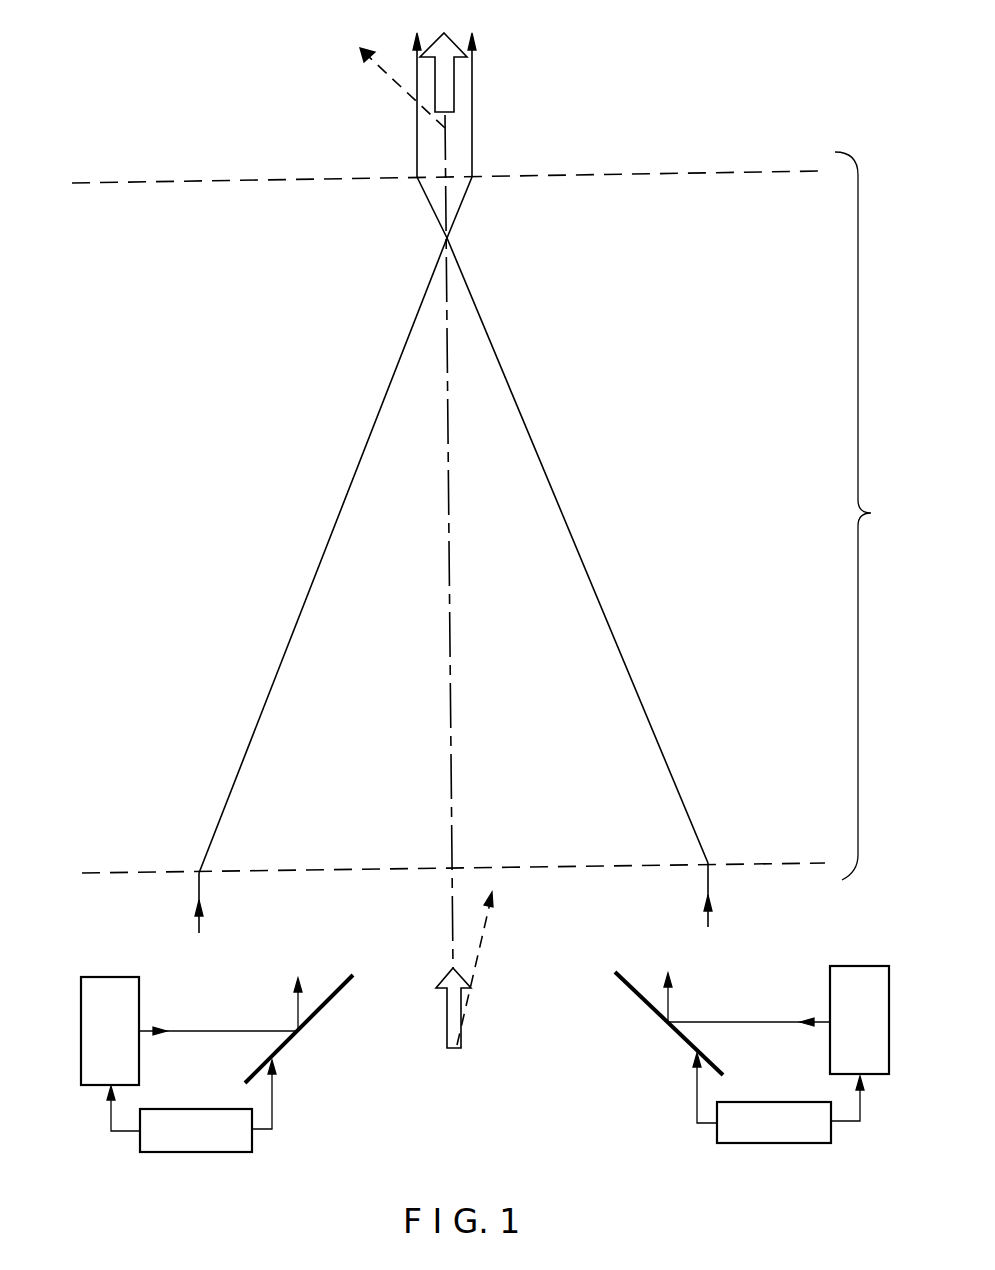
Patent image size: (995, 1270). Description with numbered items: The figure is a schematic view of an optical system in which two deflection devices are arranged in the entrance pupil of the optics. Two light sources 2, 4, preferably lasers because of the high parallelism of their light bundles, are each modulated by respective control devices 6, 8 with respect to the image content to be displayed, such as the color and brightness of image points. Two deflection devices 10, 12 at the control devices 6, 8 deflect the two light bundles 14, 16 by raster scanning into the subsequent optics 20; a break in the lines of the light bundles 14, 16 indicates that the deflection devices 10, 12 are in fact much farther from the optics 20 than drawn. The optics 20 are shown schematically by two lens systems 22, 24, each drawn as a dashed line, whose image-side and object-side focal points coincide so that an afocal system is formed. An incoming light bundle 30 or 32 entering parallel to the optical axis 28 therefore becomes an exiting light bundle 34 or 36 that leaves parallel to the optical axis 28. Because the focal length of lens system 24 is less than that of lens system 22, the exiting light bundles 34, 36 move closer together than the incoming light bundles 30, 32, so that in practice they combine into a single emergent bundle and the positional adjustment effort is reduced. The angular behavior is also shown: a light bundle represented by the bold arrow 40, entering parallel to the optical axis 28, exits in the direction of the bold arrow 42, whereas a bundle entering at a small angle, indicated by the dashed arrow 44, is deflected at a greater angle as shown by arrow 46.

The light source 2 is at (113, 977).
The light source 4 is at (830, 985).
The control device 6 is at (202, 1152).
The control device 8 is at (738, 1143).
The deflection device 10 is at (290, 1047).
The deflection device 12 is at (643, 1005).
The light bundle 14 is at (202, 1030).
The light bundle 16 is at (757, 1021).
The optics 20 is at (870, 516).
The lens system 22 is at (743, 863).
The lens system 24 is at (633, 171).
The optical axis 28 is at (450, 603).
The incoming light bundle 30 is at (205, 917).
The incoming light bundle 32 is at (705, 897).
The exiting light bundle 34 is at (417, 143).
The exiting light bundle 36 is at (473, 137).
The bold arrow 40 is at (450, 1010).
The bold arrow 42 is at (447, 35).
The dashed arrow 44 is at (482, 932).
The arrow 46 is at (390, 78).